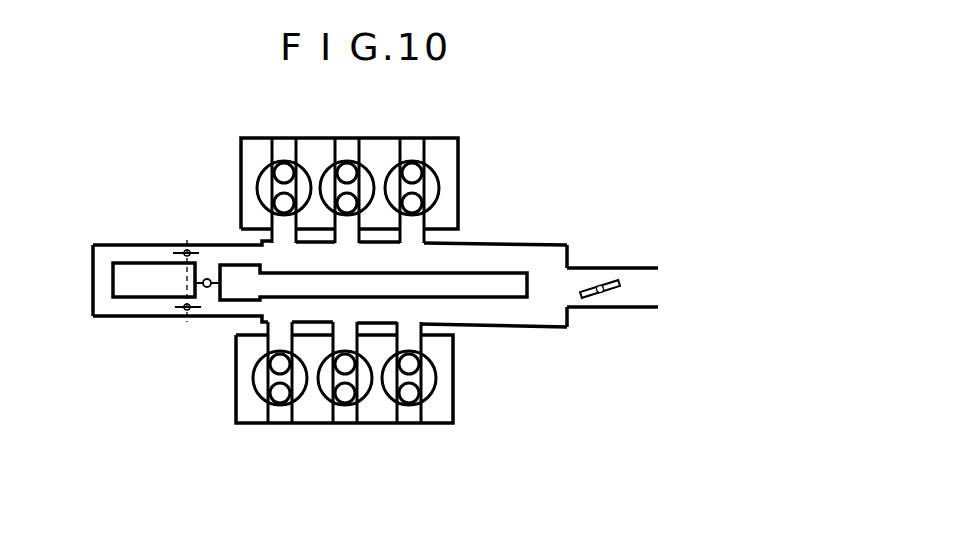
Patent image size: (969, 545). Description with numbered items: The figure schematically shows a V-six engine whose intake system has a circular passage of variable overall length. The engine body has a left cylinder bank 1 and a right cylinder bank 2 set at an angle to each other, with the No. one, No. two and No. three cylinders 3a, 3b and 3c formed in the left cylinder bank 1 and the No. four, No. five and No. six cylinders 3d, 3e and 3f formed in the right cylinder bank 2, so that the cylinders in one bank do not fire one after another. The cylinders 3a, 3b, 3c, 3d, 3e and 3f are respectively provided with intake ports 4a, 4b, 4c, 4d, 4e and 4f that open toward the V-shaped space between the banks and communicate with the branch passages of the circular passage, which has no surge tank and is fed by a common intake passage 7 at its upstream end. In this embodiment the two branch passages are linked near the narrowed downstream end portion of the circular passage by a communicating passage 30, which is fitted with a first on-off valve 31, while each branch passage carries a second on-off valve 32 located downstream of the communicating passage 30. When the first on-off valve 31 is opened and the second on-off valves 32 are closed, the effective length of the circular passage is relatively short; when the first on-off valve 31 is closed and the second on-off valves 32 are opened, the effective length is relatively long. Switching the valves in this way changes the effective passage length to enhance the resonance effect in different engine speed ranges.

The left cylinder bank 1 is at (247, 128).
The right cylinder bank 2 is at (226, 399).
The No. 1 cylinder 3a is at (438, 174).
The No. 2 cylinder 3b is at (368, 168).
The No. 3 cylinder 3c is at (257, 175).
The No. 4 cylinder 3d is at (426, 393).
The No. 5 cylinder 3e is at (262, 397).
The No. 6 cylinder 3f is at (320, 388).
The intake port 4a is at (421, 203).
The intake port 4b is at (337, 171).
The intake port 4c is at (276, 203).
The intake port 4d is at (419, 364).
The intake port 4e is at (291, 395).
The intake port 4f is at (356, 395).
The common intake passage 7 is at (629, 308).
The communicating passage 30 is at (222, 284).
The first on-off valve 31 is at (208, 279).
The second on-off valve 32 is at (184, 256).